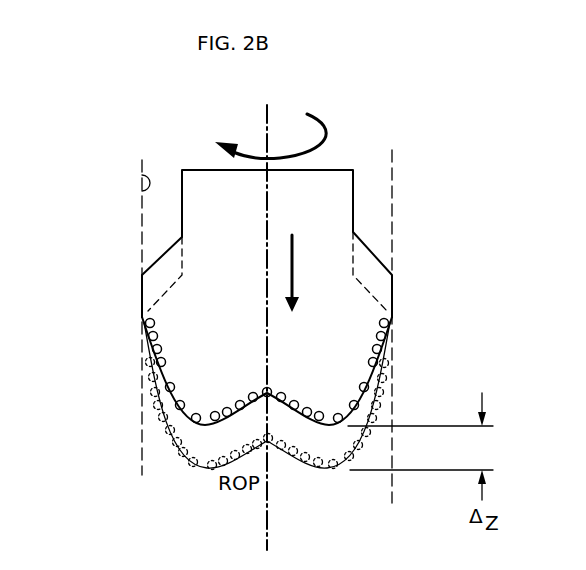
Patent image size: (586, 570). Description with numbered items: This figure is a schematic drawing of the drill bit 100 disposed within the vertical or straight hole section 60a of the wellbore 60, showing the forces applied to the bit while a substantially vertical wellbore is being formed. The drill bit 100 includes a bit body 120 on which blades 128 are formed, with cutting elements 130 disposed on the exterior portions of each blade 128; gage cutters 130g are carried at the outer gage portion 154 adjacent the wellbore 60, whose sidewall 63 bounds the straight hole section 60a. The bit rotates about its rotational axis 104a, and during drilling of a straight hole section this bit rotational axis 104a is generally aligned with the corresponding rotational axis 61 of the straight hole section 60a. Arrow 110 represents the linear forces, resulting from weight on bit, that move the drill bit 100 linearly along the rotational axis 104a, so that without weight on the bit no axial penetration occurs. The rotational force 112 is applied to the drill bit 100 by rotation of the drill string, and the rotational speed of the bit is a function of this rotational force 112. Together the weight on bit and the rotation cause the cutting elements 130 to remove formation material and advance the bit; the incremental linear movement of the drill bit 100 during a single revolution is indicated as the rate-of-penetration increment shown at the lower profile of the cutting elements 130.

The straight hole section rotational axis 61 is at (244, 126).
The rotational force 112 is at (308, 114).
The bit body 120 is at (363, 188).
The straight hole section 60a is at (392, 208).
The wellbore sidewall 63 is at (141, 185).
The wellbore 60 is at (126, 251).
The arrow 110 is at (303, 237).
The gage portion 154 is at (141, 309).
The gage cutters 130g is at (145, 326).
The cutting elements 130 is at (174, 392).
The blades 128 is at (151, 432).
The drill bit 100 is at (114, 390).
The rotational axis 104a is at (268, 527).